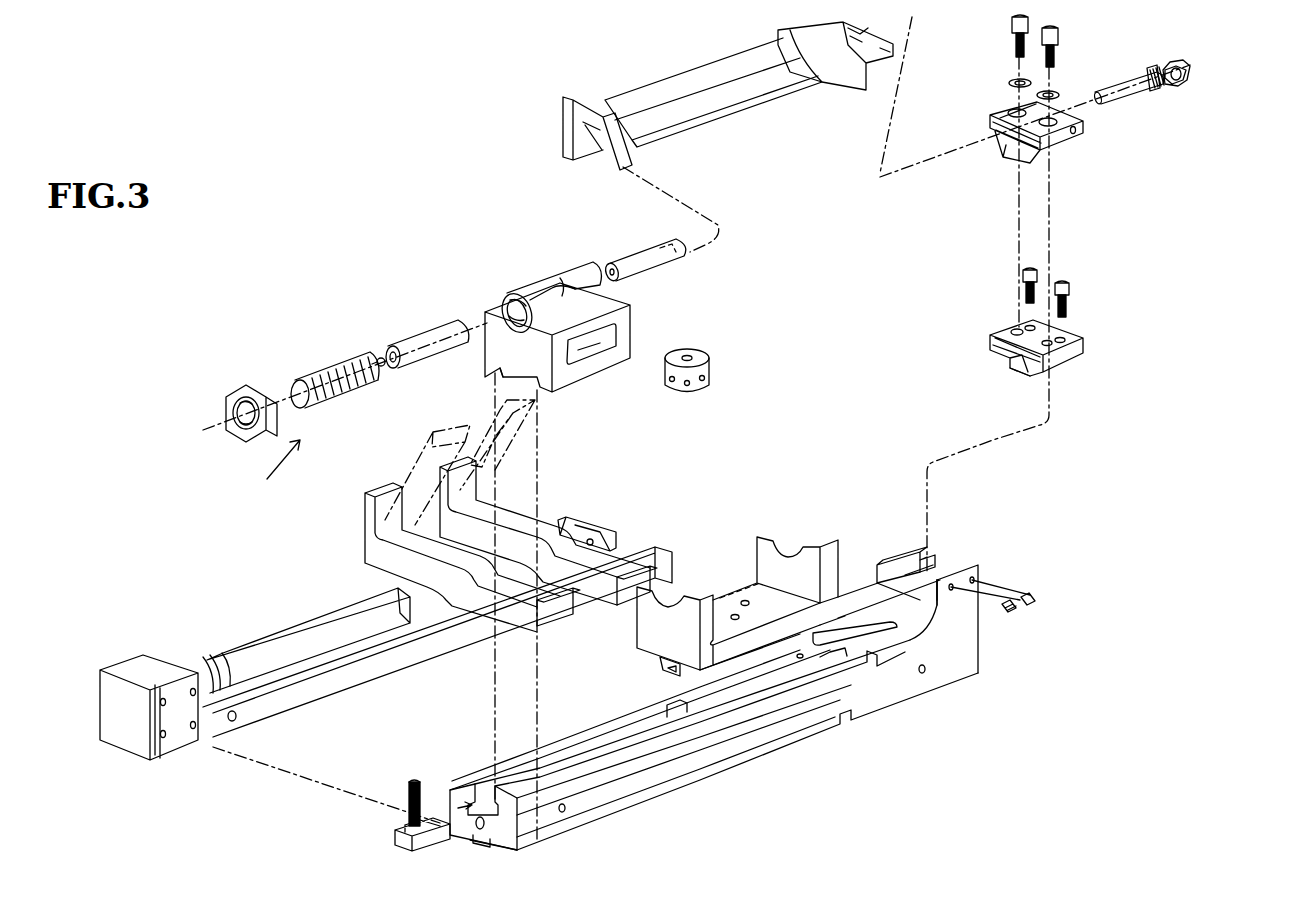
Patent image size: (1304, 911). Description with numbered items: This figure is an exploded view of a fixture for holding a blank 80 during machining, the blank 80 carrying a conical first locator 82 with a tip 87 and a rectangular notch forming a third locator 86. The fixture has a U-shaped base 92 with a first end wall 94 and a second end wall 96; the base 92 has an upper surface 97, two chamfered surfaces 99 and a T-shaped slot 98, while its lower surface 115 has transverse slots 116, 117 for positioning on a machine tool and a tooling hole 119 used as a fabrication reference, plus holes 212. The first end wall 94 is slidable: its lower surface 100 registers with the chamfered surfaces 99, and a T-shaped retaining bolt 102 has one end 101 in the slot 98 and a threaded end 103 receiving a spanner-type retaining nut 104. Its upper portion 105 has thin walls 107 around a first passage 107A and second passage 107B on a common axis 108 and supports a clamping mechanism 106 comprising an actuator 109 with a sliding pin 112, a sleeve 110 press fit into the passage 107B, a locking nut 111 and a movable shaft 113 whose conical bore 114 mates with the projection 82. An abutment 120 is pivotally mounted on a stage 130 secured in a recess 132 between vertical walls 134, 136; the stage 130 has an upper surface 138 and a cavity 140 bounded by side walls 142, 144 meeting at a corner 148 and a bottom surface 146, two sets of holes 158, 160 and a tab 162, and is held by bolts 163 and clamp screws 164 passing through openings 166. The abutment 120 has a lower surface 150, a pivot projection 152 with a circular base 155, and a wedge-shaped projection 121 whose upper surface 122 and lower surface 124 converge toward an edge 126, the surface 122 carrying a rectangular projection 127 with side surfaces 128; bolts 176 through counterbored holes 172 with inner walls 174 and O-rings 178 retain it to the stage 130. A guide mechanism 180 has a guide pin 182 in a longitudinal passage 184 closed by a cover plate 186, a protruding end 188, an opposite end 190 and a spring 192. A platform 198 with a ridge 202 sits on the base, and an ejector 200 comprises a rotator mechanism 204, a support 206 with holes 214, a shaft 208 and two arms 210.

The blank 80 is at (705, 86).
The first locator 82 is at (634, 63).
The third locator 86 is at (856, 34).
The tip 87 is at (566, 125).
The base 92 is at (697, 765).
The first end wall 94 is at (572, 336).
The second end wall 96 is at (984, 650).
The upper surface 97 is at (567, 743).
The T-shaped slot 98 is at (458, 806).
The chamfered surfaces 99 is at (515, 795).
The lower surface 100 is at (497, 378).
The end 101 is at (398, 844).
The T-shaped retaining bolt 102 is at (389, 794).
The threaded end 103 is at (396, 795).
The retaining nut 104 is at (700, 350).
The upper portion 105 is at (630, 314).
The clamping mechanism 106 is at (266, 476).
The walls 107 is at (531, 280).
The first passage 107A is at (510, 297).
The second passage 107B is at (540, 285).
The common axis 108 is at (497, 345).
The actuator 109 is at (322, 366).
The sleeve 110 is at (438, 330).
The locking nut 111 is at (238, 385).
The sliding pin 112 is at (378, 356).
The movable shaft 113 is at (645, 258).
The bore 114 is at (665, 240).
The lower surface 115 is at (503, 850).
The transverse slot 116 is at (480, 843).
The transverse slot 117 is at (848, 722).
The tooling hole 119 is at (488, 822).
The abutment 120 is at (1091, 290).
The wedge-shaped projection 121 is at (995, 122).
The upper surface 122 is at (1043, 124).
The lower surface 124 is at (1040, 150).
The edge 126 is at (992, 123).
The rectangular projection 127 is at (1003, 118).
The side surfaces 128 is at (1078, 134).
The stage 130 is at (1026, 350).
The recess 132 is at (943, 551).
The vertical wall 134 is at (965, 575).
The vertical wall 136 is at (915, 550).
The upper surface 138 is at (1060, 328).
The cavity 140 is at (1026, 355).
The side wall 142 is at (992, 348).
The side wall 144 is at (1025, 378).
The bottom surface 146 is at (1012, 328).
The corner 148 is at (1012, 360).
The lower surface 150 is at (998, 140).
The pivot projection 152 is at (1010, 166).
The circular base 155 is at (1020, 155).
The holes 158 is at (1068, 343).
The holes 160 is at (1063, 347).
The tab 162 is at (1012, 374).
The bolts 163 is at (1068, 290).
The clamp screws 164 is at (1028, 606).
The openings 166 is at (955, 587).
The counterbored holes 172 is at (1064, 106).
The inner wall 174 is at (1018, 105).
The bolts 176 is at (1044, 38).
The compressible O-ring 178 is at (1012, 78).
The guide mechanism 180 is at (1181, 86).
The guide pin 182 is at (1141, 101).
The longitudinal passage 184 is at (1002, 150).
The cover plate 186 is at (1183, 82).
The end 188 is at (1105, 103).
The end 190 is at (1152, 88).
The spring 192 is at (1150, 72).
The platform 198 is at (841, 587).
The ejector 200 is at (566, 497).
The protruding ridge 202 is at (660, 672).
The rotator mechanism 204 is at (122, 665).
The support 206 is at (607, 530).
The shaft 208 is at (278, 632).
The arms 210 is at (432, 430).
The holes 212 is at (568, 812).
The holes 214 is at (240, 718).